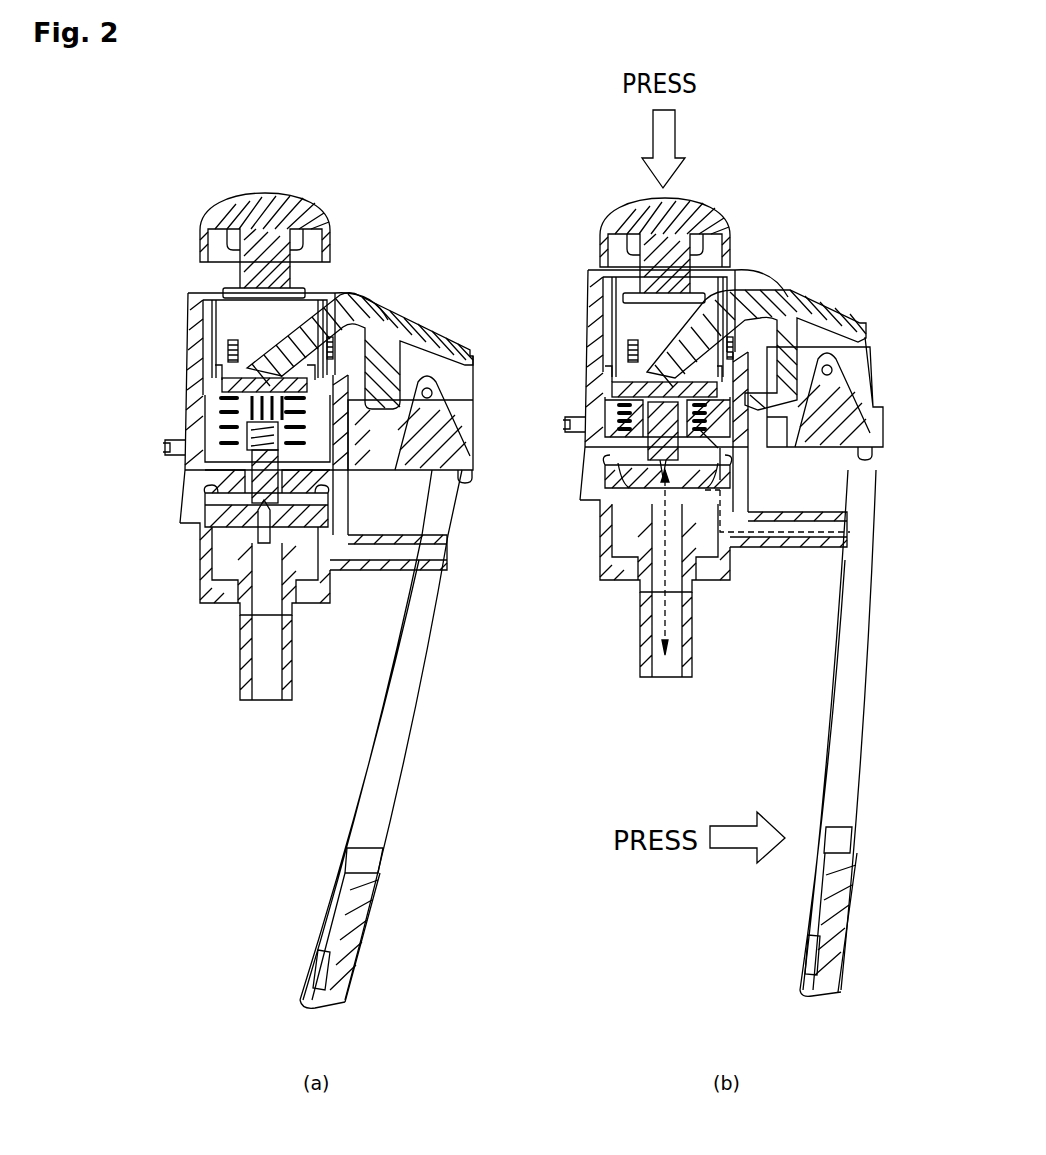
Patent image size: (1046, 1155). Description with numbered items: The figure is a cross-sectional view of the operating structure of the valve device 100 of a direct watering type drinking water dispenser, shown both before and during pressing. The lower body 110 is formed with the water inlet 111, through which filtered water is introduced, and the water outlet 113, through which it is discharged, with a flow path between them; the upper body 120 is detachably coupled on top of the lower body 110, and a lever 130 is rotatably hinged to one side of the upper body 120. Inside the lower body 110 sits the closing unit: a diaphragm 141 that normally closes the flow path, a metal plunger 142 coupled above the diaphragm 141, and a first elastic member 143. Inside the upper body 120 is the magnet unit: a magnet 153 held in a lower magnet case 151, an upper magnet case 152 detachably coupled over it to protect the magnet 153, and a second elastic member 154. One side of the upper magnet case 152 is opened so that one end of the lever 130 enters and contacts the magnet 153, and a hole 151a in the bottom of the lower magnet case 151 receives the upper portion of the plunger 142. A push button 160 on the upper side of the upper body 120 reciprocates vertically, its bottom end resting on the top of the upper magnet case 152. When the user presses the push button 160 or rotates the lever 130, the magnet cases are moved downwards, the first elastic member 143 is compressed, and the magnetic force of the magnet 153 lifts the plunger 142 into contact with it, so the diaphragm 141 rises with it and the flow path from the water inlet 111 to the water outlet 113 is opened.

The valve device 100 is at (161, 172).
The lower body 110 is at (200, 598).
The water inlet 111 is at (362, 545).
The water outlet 113 is at (262, 690).
The upper body 120 is at (198, 415).
The lever 130 is at (393, 748).
The diaphragm 141 is at (215, 515).
The plunger 142 is at (252, 470).
The first elastic member 143 is at (221, 428).
The lower magnet case 151 is at (230, 375).
The hole 151a is at (706, 432).
The upper magnet case 152 is at (225, 315).
The magnet 153 is at (333, 343).
The second elastic member 154 is at (235, 382).
The push button 160 is at (313, 235).